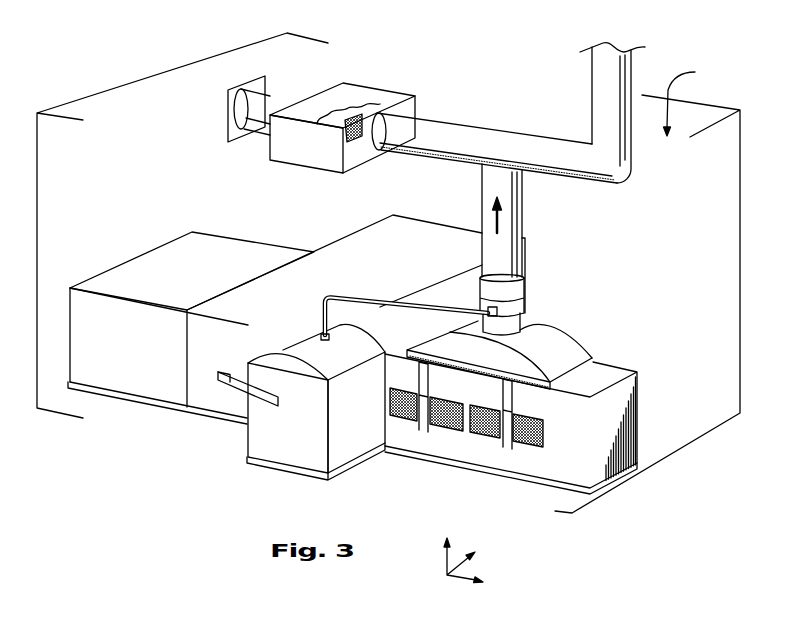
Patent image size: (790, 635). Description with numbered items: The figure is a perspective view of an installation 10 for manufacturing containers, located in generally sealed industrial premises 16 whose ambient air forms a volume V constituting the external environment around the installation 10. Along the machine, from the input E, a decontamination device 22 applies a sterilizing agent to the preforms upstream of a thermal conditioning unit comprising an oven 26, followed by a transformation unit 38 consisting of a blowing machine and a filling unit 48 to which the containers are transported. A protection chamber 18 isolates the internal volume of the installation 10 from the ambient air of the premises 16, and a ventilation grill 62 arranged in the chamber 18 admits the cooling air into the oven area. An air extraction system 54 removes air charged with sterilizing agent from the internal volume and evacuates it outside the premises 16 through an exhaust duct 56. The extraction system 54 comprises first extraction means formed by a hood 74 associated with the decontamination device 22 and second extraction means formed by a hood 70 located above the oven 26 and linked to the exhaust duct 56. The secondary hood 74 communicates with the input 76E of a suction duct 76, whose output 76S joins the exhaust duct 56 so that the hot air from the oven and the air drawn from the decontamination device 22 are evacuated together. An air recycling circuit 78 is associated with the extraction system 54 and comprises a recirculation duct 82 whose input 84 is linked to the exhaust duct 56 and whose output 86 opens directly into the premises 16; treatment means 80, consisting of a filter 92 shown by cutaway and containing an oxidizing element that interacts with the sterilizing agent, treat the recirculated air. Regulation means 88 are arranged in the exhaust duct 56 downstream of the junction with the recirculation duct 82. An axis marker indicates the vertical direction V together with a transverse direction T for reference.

The installation 10 is at (374, 360).
The industrial premises 16 is at (63, 122).
The protection chamber 18 is at (623, 427).
The decontamination device 22 is at (296, 452).
The oven 26 is at (520, 468).
The transformation unit 38 is at (337, 262).
The filling unit 48 is at (149, 270).
The air extraction system 54 is at (532, 416).
The exhaust duct 56 is at (600, 117).
The ventilation grill 62 is at (483, 433).
The hood 70 is at (557, 347).
The hood 74 is at (303, 348).
The suction duct 76 is at (381, 348).
The input of the suction duct 76E is at (328, 340).
The output of the suction duct 76S is at (522, 303).
The air recycling circuit 78 is at (408, 126).
The treatment means 80 is at (297, 156).
The recirculation duct 82 is at (452, 143).
The input of the recirculation duct 84 is at (354, 134).
The output of the recirculation duct 86 is at (228, 106).
The regulation means 88 is at (481, 138).
The filter 92 is at (355, 112).
The input E is at (278, 399).
The volume of ambient air V is at (690, 97).
The axis triad T L V T is at (462, 564).